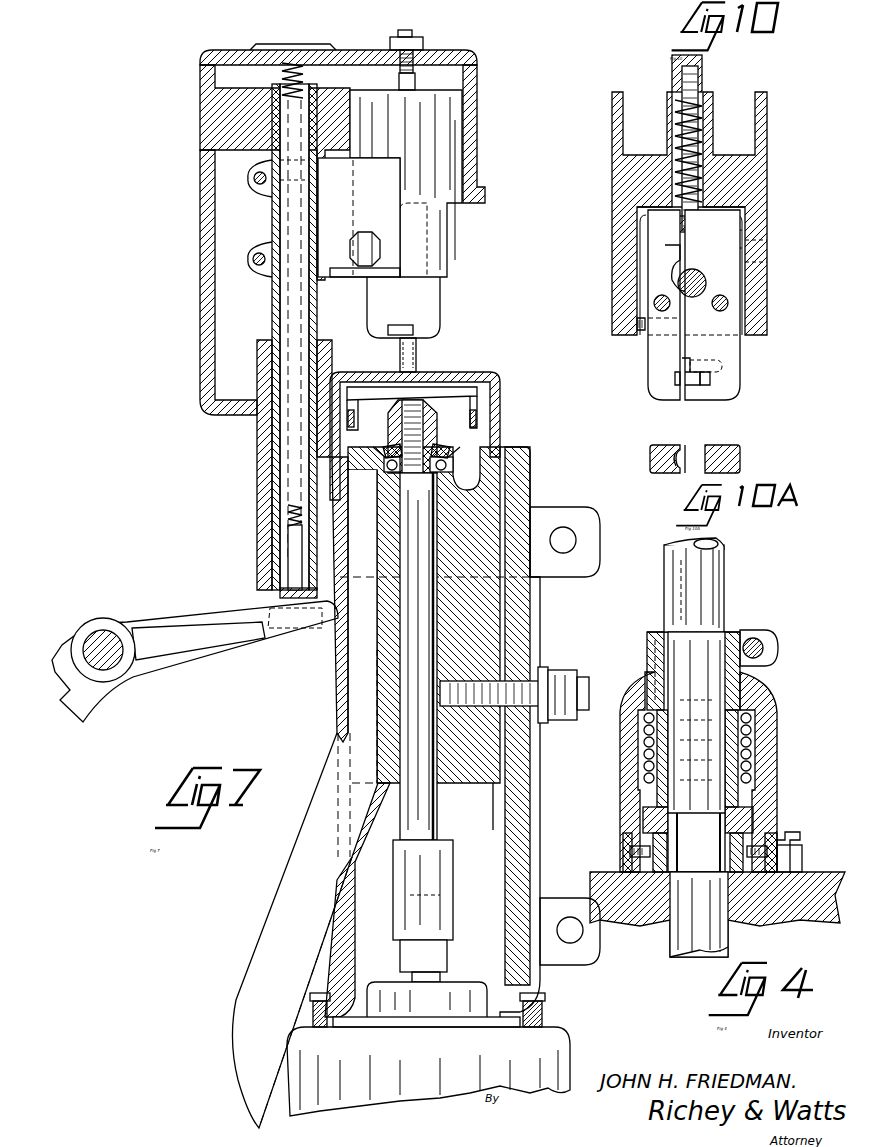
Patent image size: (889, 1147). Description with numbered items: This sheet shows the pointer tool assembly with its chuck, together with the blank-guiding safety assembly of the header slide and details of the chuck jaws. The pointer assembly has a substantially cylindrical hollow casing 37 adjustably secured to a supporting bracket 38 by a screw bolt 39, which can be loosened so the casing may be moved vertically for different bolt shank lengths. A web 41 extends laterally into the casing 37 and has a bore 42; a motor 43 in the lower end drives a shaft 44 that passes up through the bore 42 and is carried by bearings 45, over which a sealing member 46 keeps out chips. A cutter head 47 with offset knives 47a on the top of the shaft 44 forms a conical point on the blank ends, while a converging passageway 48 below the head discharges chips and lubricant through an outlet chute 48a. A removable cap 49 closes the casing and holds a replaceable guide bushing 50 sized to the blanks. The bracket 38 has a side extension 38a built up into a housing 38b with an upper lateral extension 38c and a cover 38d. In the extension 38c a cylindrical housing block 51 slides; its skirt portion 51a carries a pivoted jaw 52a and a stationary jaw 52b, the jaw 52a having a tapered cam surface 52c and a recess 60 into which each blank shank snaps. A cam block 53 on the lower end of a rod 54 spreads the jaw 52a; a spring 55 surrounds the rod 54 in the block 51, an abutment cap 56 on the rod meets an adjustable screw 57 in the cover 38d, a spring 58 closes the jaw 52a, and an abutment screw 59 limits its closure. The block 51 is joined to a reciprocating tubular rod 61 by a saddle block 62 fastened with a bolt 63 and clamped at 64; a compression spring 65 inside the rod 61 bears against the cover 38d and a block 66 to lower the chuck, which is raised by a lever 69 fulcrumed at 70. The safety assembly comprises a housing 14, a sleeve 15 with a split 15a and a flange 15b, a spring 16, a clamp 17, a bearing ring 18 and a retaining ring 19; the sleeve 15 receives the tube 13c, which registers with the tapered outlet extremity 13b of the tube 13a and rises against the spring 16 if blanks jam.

In FIG. 4, the hollow tube 13a is at (688, 958).
In FIG. 4, the tapered outlet extremity 13b is at (722, 858).
In FIG. 4, the tube or conduit 13c is at (723, 580).
In FIG. 4, the housing 14 is at (778, 750).
In FIG. 4, the sleeve 15 is at (742, 695).
In FIG. 4, the split 15a is at (726, 620).
In FIG. 4, the flange 15b is at (760, 820).
In FIG. 4, the spring 16 is at (752, 725).
In FIG. 4, the clamp 17 is at (770, 642).
In FIG. 4, the bearing ring 18 is at (755, 800).
In FIG. 4, the retaining and bearing ring 19 is at (790, 840).
In FIG. 7, the casing or housing 37 is at (487, 632).
In FIG. 7, the supporting bracket 38 is at (522, 500).
In FIG. 7, the side extension 38a is at (262, 486).
In FIG. 7, the housing 38b is at (208, 272).
In FIG. 7, the lateral extension 38c is at (228, 112).
In FIG. 7, the cap or cover 38d is at (222, 52).
In FIG. 7, the screw bolt 39 is at (586, 686).
In FIG. 7, the web 41 is at (378, 695).
In FIG. 7, the bore 42 is at (397, 623).
In FIG. 7, the motor 43 is at (562, 1045).
In FIG. 7, the shaft 44 is at (437, 800).
In FIG. 7, the bearings 45 is at (466, 472).
In FIG. 7, the sealing member 46 is at (382, 446).
In FIG. 7, the cutter head 47 is at (495, 374).
In FIG. 7, the cutting members or knives 47a is at (462, 388).
In FIG. 7, the passageway or opening 48 is at (482, 470).
In FIG. 7, the outlet chute 48a is at (270, 968).
In FIG. 7, the cap or cover 49 is at (450, 387).
In FIG. 7, the guide bushing 50 is at (420, 370).
In FIG. 7, the cylindrical housing block 51 is at (458, 128).
In FIG. 10, the cylindrical housing block 51 is at (768, 172).
In FIG. 10, the skirt portion 51a is at (770, 282).
In FIG. 10, the gripping jaw 52a is at (650, 348).
In FIG. 10A, the gripping jaw 52a is at (650, 448).
In FIG. 10, the gripping jaw 52b is at (742, 348).
In FIG. 10A, the gripping jaw 52b is at (742, 452).
In FIG. 10A, the taper or cam surface 52c is at (678, 468).
In FIG. 10, the spreader or cam block 53 is at (675, 228).
In FIG. 10, the rod 54 is at (675, 103).
In FIG. 10, the spring 55 is at (703, 128).
In FIG. 10, the abutment cap 56 is at (702, 72).
In FIG. 7, the screw 57 is at (423, 38).
In FIG. 10, the spring 58 is at (638, 312).
In FIG. 10, the abutment screw 59 is at (688, 372).
In FIG. 10A, the recess 60 is at (688, 458).
In FIG. 7, the tubular rod 61 is at (273, 302).
In FIG. 7, the saddle block 62 is at (342, 235).
In FIG. 7, the bolt 63 is at (362, 232).
In FIG. 7, the clamp 64 is at (259, 185).
In FIG. 7, the compression spring 65 is at (305, 72).
In FIG. 7, the block 66 is at (288, 544).
In FIG. 7, the lever 69 is at (230, 648).
In FIG. 7, the fulcrum 70 is at (100, 640).